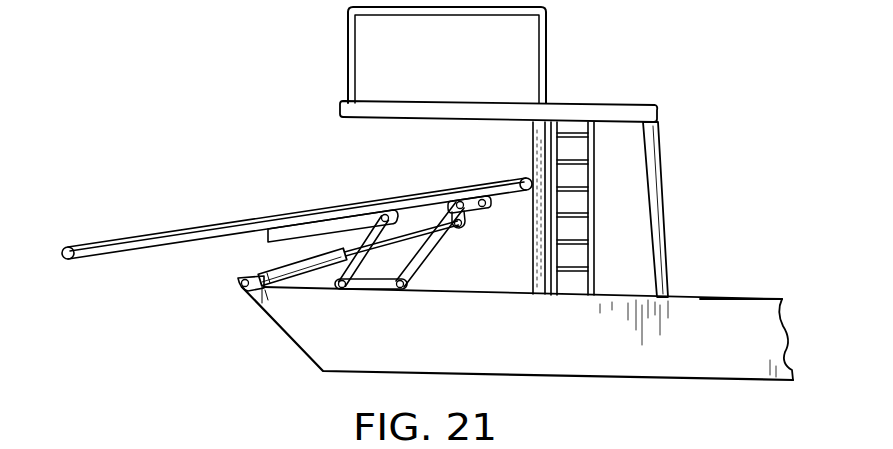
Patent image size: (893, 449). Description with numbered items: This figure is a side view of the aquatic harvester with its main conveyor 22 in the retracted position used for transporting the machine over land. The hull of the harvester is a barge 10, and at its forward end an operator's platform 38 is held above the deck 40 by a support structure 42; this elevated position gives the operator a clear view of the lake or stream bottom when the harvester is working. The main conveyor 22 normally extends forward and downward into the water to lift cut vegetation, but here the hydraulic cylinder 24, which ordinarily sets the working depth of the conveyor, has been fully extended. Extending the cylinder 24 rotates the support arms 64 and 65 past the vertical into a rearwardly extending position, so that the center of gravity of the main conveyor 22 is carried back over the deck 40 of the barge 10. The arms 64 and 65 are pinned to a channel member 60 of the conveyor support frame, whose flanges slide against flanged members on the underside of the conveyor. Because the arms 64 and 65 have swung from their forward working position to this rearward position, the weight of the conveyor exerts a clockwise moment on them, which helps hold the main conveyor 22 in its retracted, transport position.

The barge 10 is at (632, 358).
The main conveyor 22 is at (206, 222).
The hydraulic cylinder 24 is at (287, 270).
The operator's platform 38 is at (492, 110).
The deck 40 is at (762, 298).
The support structure 42 is at (669, 130).
The channel member 60 is at (329, 193).
The support arm 64 is at (364, 272).
The support arm 65 is at (430, 257).